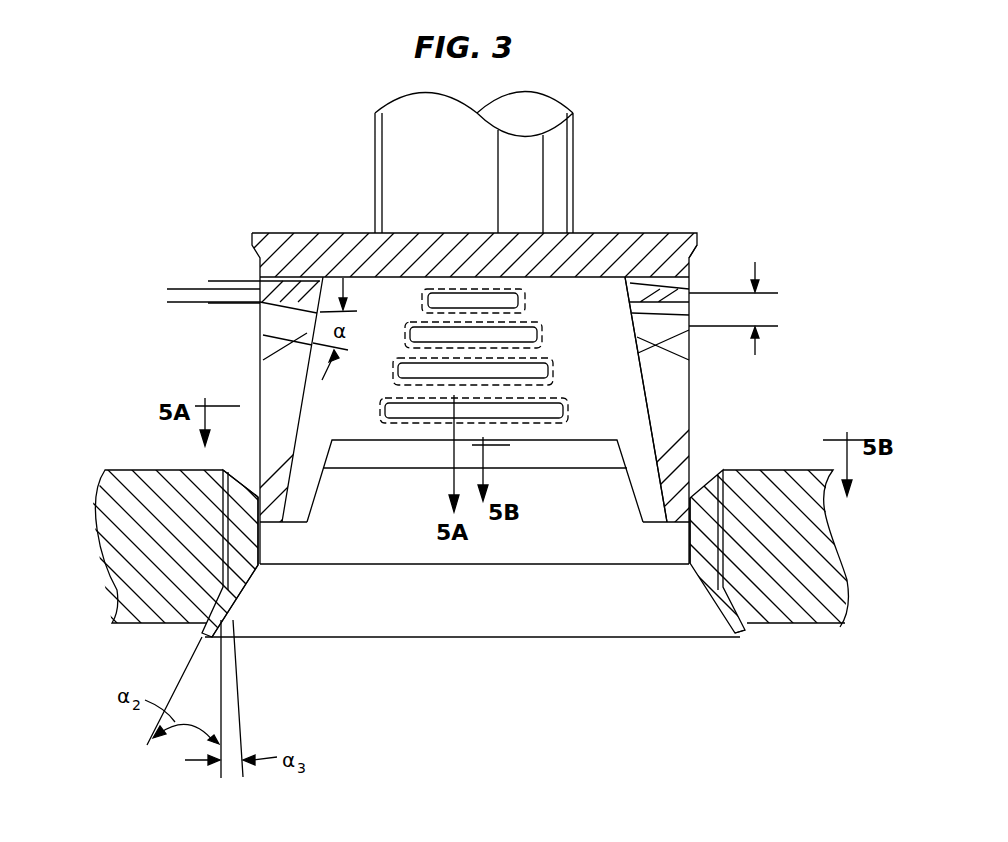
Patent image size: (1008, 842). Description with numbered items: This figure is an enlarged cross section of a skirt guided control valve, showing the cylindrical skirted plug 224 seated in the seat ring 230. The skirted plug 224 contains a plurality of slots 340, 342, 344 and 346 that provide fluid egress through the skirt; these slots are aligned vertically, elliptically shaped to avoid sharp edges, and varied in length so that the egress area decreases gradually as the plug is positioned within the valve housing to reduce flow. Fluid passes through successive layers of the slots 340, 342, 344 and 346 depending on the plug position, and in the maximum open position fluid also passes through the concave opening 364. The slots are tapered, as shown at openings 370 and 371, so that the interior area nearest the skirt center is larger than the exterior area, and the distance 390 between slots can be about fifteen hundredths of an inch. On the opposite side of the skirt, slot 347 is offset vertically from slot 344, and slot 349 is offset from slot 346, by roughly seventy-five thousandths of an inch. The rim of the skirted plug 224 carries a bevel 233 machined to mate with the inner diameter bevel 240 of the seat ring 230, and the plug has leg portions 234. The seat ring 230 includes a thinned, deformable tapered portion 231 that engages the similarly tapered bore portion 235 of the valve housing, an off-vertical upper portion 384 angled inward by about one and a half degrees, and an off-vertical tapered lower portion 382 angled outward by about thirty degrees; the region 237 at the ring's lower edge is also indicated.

The skirted plug 224 is at (609, 252).
The bevel 233 is at (689, 262).
The opening 370 is at (185, 302).
The opening 371 is at (222, 248).
The slot 340 is at (526, 299).
The slot 342 is at (541, 336).
The slot 344 is at (552, 372).
The slot 346 is at (568, 412).
The slot 347 is at (672, 368).
The slot 349 is at (673, 405).
The distance 390 is at (775, 307).
The inner diameter bevel 240 is at (702, 483).
The concave opening 364 is at (475, 481).
The leg portions 234 is at (672, 472).
The seat ring 230 is at (247, 572).
The off-vertical upper portion 384 is at (237, 527).
The tapered bore portion 235 is at (207, 587).
The off-vertical tapered lower portion 382 is at (213, 613).
The tapered portion 231 is at (243, 587).
The wedge tip 237 is at (745, 635).